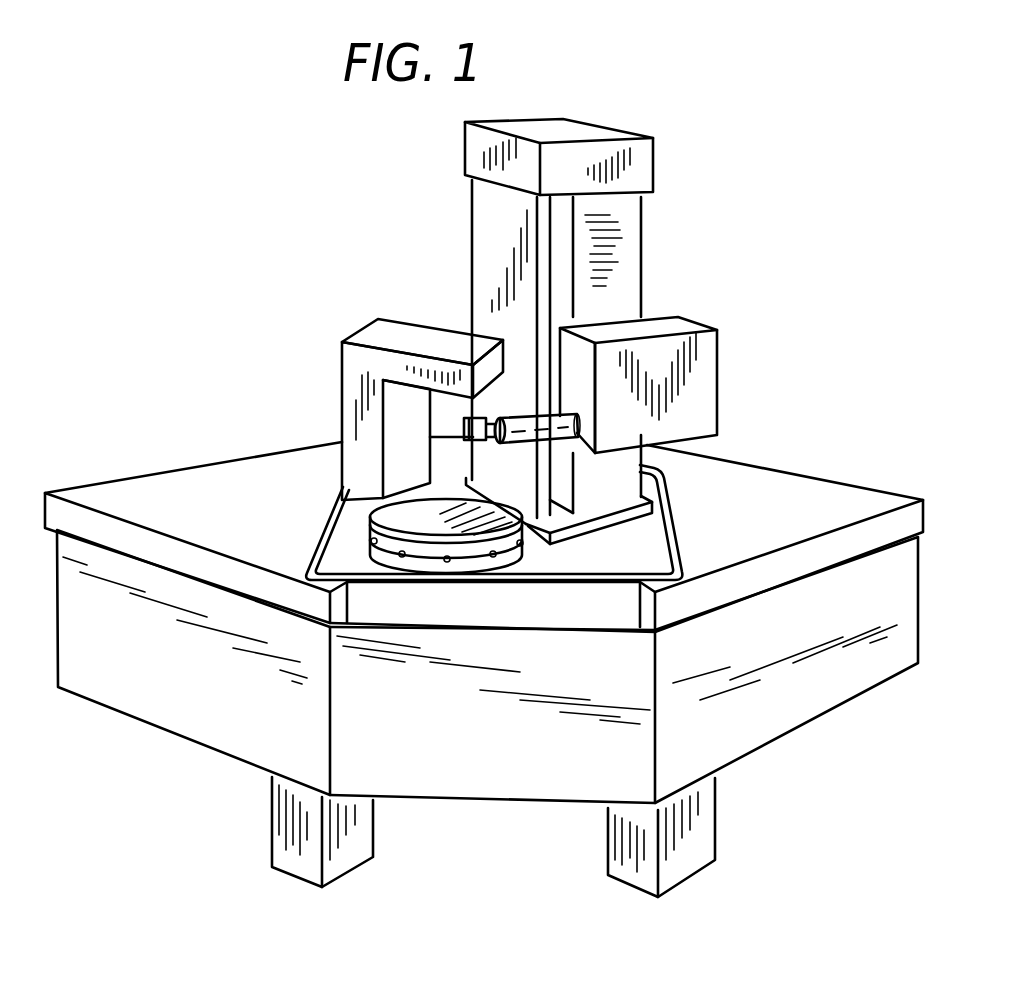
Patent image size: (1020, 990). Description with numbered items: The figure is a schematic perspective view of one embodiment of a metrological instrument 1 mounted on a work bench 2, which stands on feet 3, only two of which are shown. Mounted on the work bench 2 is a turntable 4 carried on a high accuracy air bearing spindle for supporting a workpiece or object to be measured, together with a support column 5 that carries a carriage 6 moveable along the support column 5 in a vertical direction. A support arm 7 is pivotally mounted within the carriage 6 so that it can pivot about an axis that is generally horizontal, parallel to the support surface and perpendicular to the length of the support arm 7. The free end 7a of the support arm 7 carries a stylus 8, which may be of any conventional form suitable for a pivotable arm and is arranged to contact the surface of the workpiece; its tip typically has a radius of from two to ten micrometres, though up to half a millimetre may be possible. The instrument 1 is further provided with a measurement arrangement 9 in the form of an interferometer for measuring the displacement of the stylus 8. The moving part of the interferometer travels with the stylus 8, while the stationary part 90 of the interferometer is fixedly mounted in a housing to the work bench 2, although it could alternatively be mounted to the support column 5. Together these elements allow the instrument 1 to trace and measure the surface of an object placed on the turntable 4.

The metrological instrument 1 is at (710, 293).
The work bench 2 is at (505, 768).
The feet 3 is at (703, 838).
The turntable 4 is at (455, 532).
The support column 5 is at (632, 251).
The carriage 6 is at (710, 365).
The support arm 7 is at (578, 431).
The free end 7a is at (481, 414).
The stylus 8 is at (472, 440).
The measurement arrangement 9 is at (330, 353).
The stationary part 90 is at (383, 335).